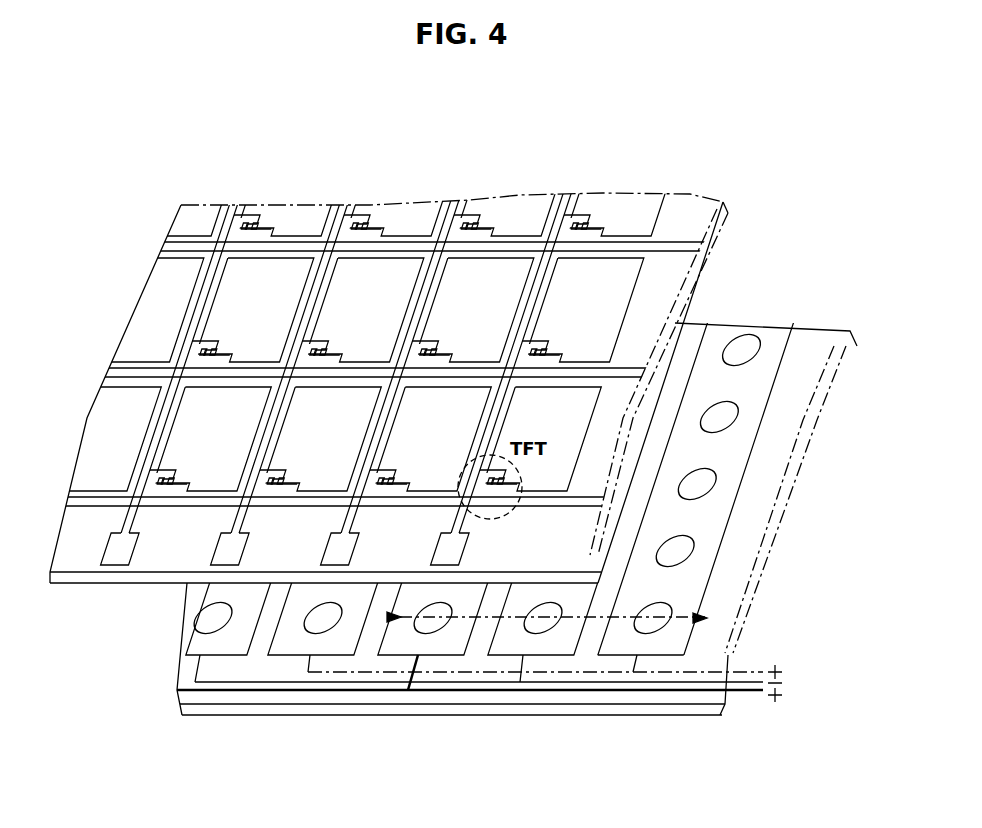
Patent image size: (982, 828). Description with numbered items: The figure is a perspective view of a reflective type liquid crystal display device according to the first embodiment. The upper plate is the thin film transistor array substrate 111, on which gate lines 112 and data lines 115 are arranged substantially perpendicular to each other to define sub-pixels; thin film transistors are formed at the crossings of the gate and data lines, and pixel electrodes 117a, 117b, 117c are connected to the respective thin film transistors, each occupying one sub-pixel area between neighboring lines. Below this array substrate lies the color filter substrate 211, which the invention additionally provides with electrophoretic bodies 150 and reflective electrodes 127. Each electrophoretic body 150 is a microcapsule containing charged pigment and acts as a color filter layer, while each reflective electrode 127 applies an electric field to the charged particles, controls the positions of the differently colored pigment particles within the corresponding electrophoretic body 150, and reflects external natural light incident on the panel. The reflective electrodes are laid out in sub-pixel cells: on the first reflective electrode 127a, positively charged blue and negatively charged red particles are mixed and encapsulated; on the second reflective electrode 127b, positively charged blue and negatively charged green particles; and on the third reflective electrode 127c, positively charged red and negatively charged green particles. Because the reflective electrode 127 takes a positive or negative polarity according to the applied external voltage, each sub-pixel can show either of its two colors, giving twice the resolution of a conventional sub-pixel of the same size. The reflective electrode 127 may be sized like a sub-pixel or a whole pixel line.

The thin film transistor array substrate 111 is at (68, 570).
The gate line 112 is at (85, 500).
The data line 115 is at (113, 565).
The pixel electrode 117a is at (307, 497).
The pixel electrode 117b is at (415, 497).
The pixel electrode 117c is at (525, 496).
The reflective electrode 127 is at (778, 327).
The first reflective electrode 127a is at (403, 655).
The second reflective electrode 127b is at (502, 657).
The third reflective electrode 127c is at (610, 657).
The electrophoretic body 150 is at (752, 331).
The color filter substrate 211 is at (758, 517).